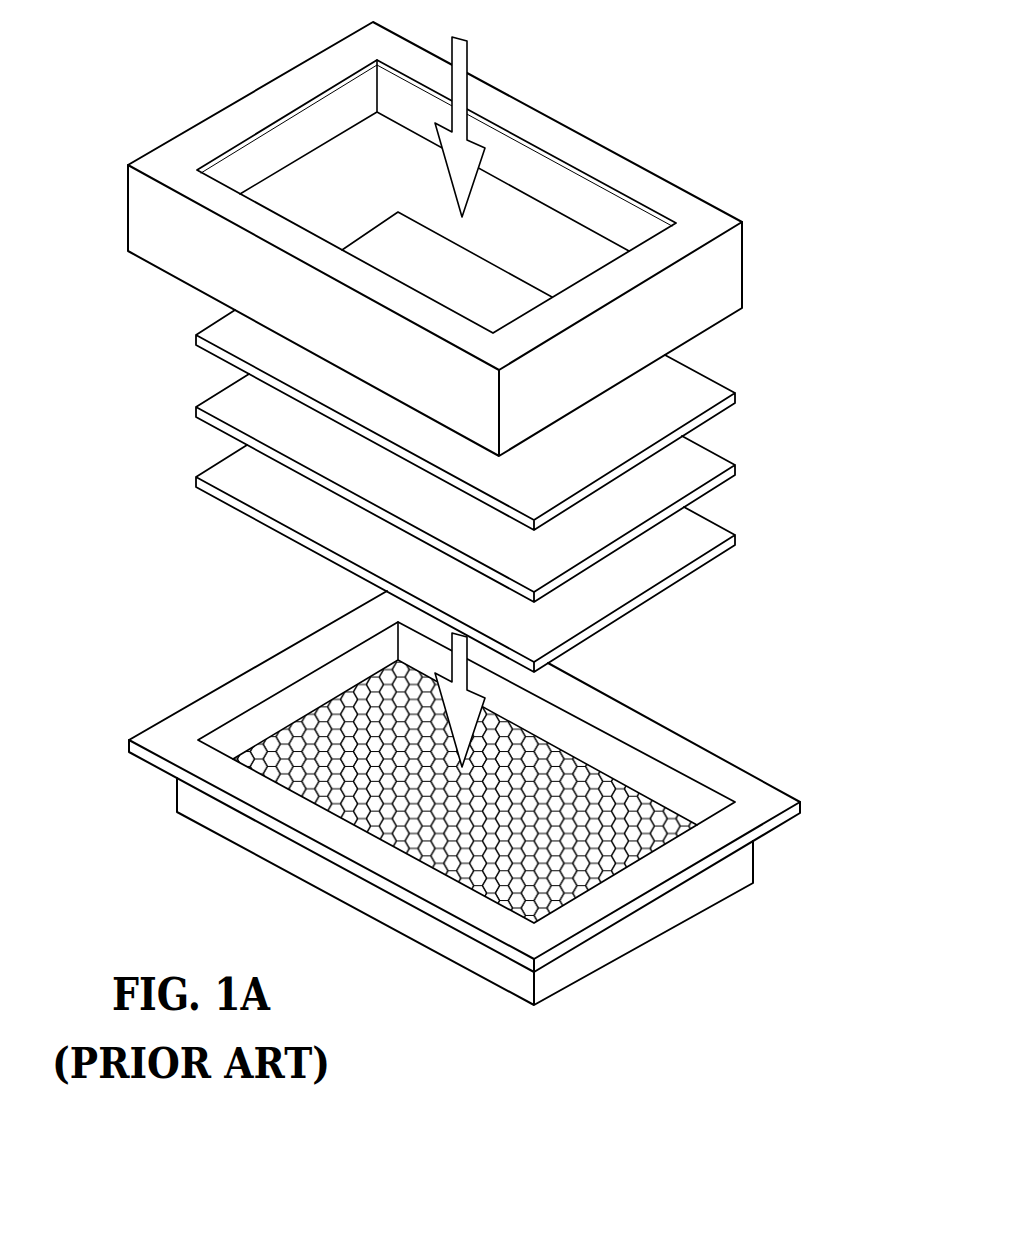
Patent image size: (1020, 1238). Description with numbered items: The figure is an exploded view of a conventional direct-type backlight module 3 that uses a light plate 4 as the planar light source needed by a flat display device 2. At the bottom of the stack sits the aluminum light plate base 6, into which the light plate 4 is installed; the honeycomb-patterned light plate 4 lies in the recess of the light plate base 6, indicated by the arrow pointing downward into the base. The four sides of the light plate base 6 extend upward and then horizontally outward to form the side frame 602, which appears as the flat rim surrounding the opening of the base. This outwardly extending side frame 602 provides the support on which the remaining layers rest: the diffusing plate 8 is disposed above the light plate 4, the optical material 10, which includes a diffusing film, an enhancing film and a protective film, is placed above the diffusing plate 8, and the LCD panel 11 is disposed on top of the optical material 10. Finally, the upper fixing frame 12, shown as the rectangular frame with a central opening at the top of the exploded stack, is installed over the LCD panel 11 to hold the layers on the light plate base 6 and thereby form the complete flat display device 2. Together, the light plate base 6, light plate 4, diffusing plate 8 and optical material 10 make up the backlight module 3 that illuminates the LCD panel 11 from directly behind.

The flat display device 2 is at (748, 80).
The upper fixing frame 12 is at (731, 277).
The LCD panel 11 is at (715, 399).
The optical material 10 is at (715, 470).
The diffusing plate 8 is at (715, 540).
The backlight module 3 is at (823, 475).
The light plate 4 is at (613, 797).
The light plate base 6 is at (500, 798).
The side frame 602 is at (698, 800).